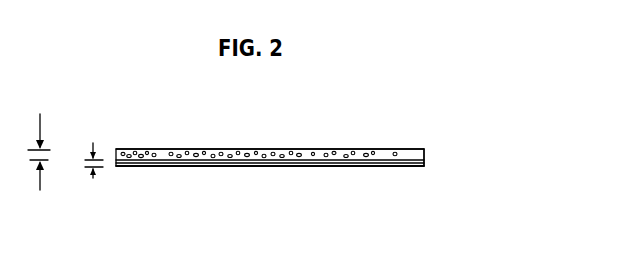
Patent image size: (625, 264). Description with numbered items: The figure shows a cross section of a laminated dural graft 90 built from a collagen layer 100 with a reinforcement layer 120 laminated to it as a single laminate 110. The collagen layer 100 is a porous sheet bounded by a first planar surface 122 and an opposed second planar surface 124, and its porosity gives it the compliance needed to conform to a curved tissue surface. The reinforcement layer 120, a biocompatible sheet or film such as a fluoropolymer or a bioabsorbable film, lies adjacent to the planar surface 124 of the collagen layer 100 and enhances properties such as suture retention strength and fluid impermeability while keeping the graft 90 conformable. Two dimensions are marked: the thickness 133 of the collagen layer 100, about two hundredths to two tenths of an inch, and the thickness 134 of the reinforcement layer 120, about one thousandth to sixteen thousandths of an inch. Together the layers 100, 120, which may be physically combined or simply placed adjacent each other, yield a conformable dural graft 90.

The laminated dural graft 90 is at (442, 108).
The collagen layer 100 is at (162, 149).
The laminate 110 is at (177, 164).
The reinforcement layer 120 is at (428, 160).
The first planar surface 122 is at (383, 168).
The second planar surface 124 is at (373, 146).
The thickness of the collagen layer 133 is at (41, 130).
The thickness of the reinforcement layer 134 is at (93, 178).